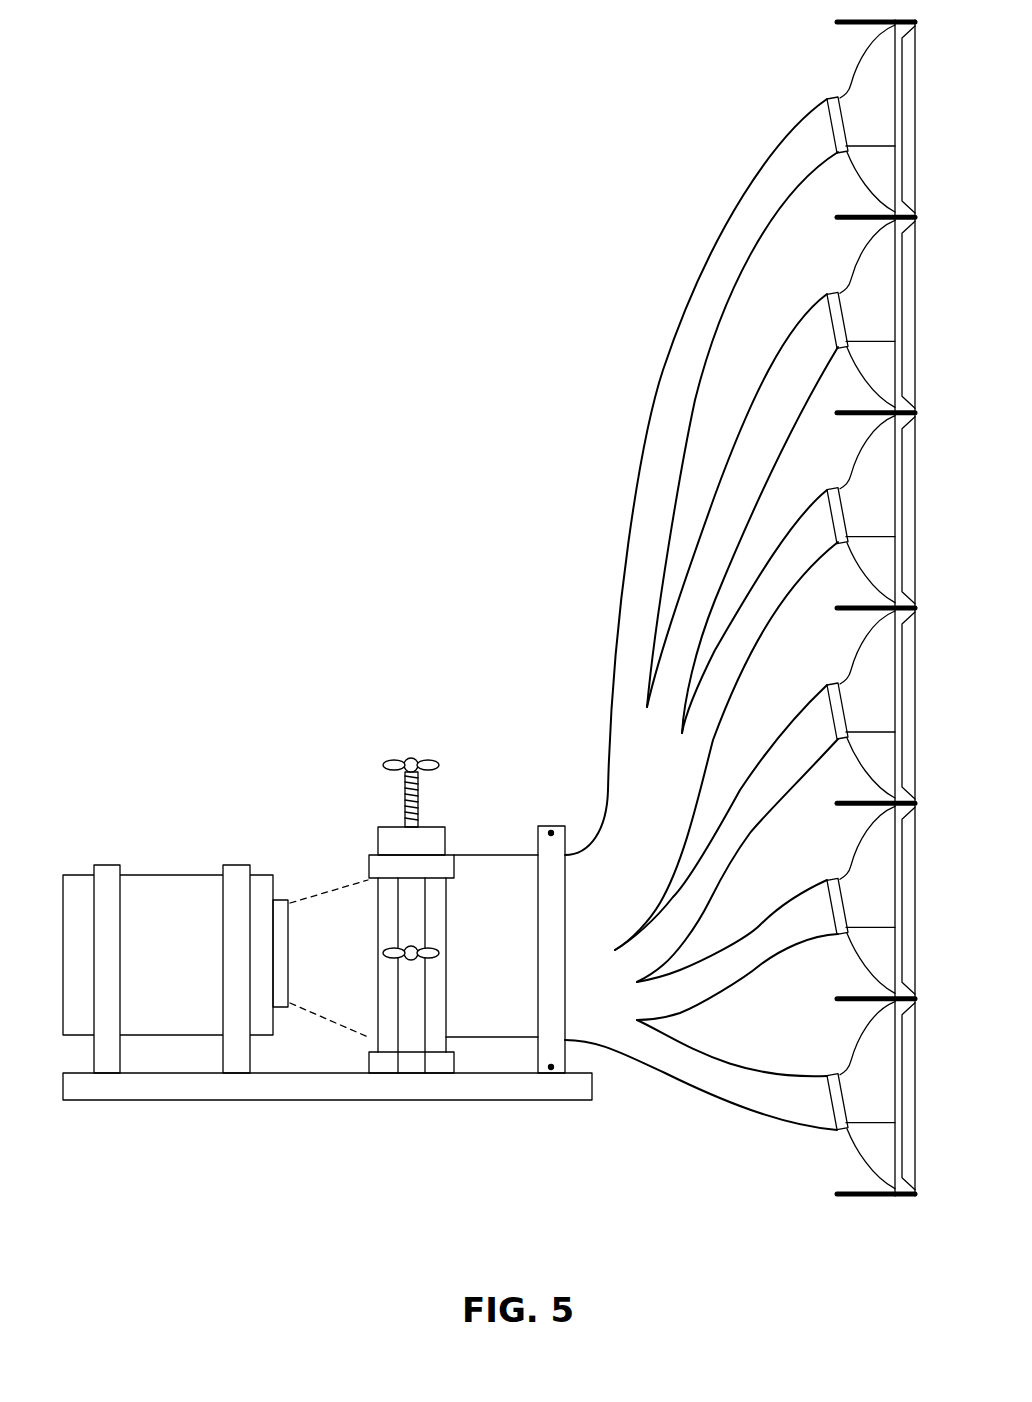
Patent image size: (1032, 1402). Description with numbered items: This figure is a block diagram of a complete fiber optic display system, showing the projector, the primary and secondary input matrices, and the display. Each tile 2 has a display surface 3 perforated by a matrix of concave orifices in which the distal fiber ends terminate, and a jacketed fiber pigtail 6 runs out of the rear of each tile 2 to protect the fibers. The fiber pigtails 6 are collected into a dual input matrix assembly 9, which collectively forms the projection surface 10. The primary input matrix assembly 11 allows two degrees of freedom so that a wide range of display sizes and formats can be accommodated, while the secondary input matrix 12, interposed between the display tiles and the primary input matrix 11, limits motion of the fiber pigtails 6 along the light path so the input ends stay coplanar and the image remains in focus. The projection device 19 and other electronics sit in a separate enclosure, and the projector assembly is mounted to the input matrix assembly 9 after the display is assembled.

The tile 2 is at (838, 58).
The display surface 3 is at (934, 78).
The fiber pigtail 6 is at (646, 341).
The dual input matrix assembly 9 is at (407, 1128).
The projection surface 10 is at (364, 905).
The primary input matrix assembly 11 is at (377, 805).
The secondary input matrix 12 is at (551, 810).
The projection device 19 is at (215, 969).